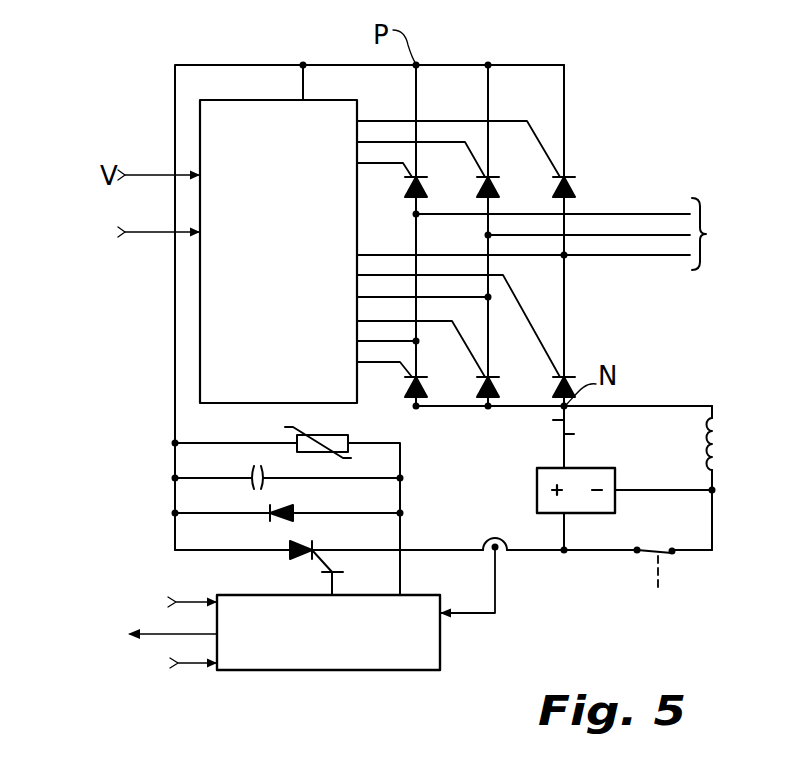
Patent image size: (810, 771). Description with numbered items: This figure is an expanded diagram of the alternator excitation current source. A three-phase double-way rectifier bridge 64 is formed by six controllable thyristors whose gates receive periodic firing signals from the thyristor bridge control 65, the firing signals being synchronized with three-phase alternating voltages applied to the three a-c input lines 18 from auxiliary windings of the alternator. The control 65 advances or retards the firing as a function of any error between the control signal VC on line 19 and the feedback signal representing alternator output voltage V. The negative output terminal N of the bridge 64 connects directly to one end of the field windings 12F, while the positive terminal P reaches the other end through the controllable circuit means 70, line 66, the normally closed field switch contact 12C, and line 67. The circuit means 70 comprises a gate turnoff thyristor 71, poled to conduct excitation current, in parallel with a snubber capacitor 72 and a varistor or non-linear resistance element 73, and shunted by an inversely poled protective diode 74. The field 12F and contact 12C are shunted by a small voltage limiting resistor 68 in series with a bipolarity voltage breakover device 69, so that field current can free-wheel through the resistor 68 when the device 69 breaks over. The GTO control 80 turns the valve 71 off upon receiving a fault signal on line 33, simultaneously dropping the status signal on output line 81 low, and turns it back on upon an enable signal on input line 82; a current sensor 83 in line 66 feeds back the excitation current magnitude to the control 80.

The rectifier bridge 64 is at (640, 183).
The thyristor bridge control 65 is at (200, 340).
The a-c input lines 18 is at (548, 234).
The control signal line 19 is at (153, 233).
The controllable circuit means 70 is at (163, 505).
The snubber capacitor 72 is at (253, 468).
The non-linear resistance element 73 is at (338, 431).
The diode 74 is at (282, 506).
The gate turnoff device 71 is at (310, 541).
The GTO control 80 is at (440, 660).
The output line 33 is at (190, 602).
The status output line 81 is at (190, 637).
The enable input line 82 is at (206, 668).
The current sensor 83 is at (491, 536).
The line 66 is at (609, 572).
The voltage limiting resistor 68 is at (553, 424).
The bipolarity voltage breakover device 69 is at (537, 470).
The line 67 is at (712, 518).
The field windings 12F is at (712, 443).
The field switch contact 12C is at (672, 556).